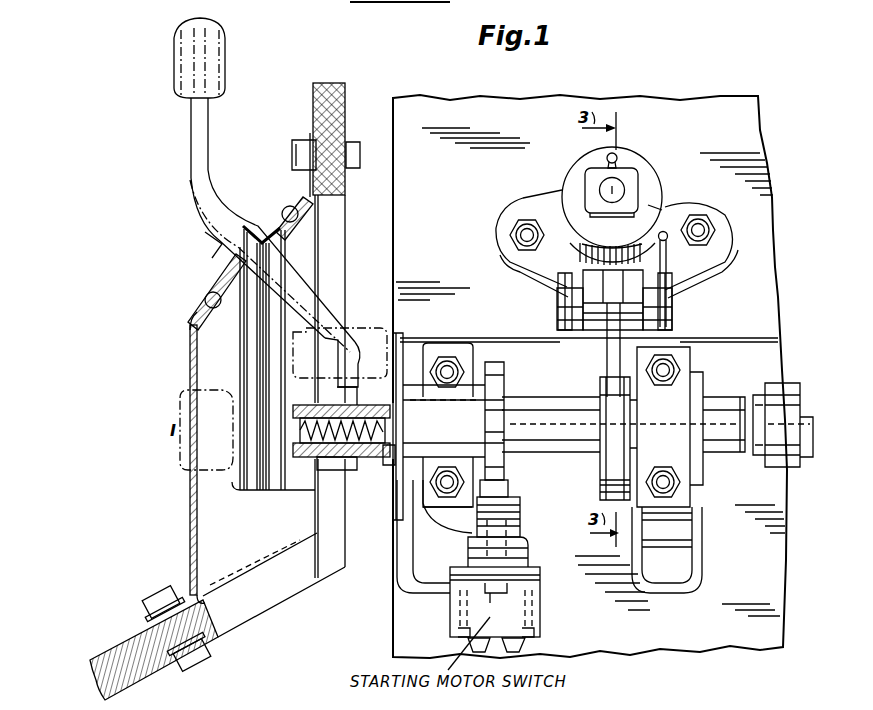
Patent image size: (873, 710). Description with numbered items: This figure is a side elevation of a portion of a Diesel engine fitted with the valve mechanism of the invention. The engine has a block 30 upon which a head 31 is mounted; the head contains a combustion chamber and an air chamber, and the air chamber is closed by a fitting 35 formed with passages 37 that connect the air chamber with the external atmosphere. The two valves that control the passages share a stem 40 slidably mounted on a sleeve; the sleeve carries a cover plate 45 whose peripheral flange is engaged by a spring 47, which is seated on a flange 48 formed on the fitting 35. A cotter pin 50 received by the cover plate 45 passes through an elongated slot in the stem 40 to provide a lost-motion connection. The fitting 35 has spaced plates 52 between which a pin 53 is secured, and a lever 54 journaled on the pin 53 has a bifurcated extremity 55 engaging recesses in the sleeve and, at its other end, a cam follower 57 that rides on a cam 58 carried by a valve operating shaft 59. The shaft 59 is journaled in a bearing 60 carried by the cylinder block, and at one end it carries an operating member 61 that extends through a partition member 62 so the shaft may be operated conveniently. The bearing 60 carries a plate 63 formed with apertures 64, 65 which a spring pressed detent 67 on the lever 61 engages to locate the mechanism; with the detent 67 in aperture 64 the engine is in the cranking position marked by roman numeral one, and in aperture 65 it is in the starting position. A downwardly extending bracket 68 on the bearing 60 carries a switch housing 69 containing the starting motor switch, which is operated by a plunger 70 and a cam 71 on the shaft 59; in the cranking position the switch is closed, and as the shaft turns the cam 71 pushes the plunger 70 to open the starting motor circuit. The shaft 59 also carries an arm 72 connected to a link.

The block 30 is at (742, 632).
The head 31 is at (726, 110).
The fitting 35 is at (672, 218).
The passages 37 is at (552, 202).
The stem 40 is at (614, 190).
The cover plate 45 is at (583, 168).
The spring 47 is at (664, 232).
The flange 48 is at (600, 272).
The cotter pin 50 is at (615, 156).
The spaced plates 52 is at (560, 288).
The pin 53 is at (676, 318).
The lever 54 is at (607, 358).
The bifurcated extremity 55 is at (570, 308).
The cam follower 57 is at (605, 383).
The cam 58 is at (617, 484).
The valve operating shaft 59 is at (710, 395).
The bearing 60 is at (465, 390).
The operating member 61 is at (191, 169).
The partition member 62 is at (190, 355).
The plate 63 is at (404, 335).
The aperture 64 is at (405, 415).
The aperture 65 is at (376, 332).
The spring pressed detent 67 is at (375, 466).
The bracket 68 is at (452, 523).
The switch housing 69 is at (480, 613).
The plunger 70 is at (507, 487).
The cam 71 is at (502, 374).
The arm 72 is at (792, 400).